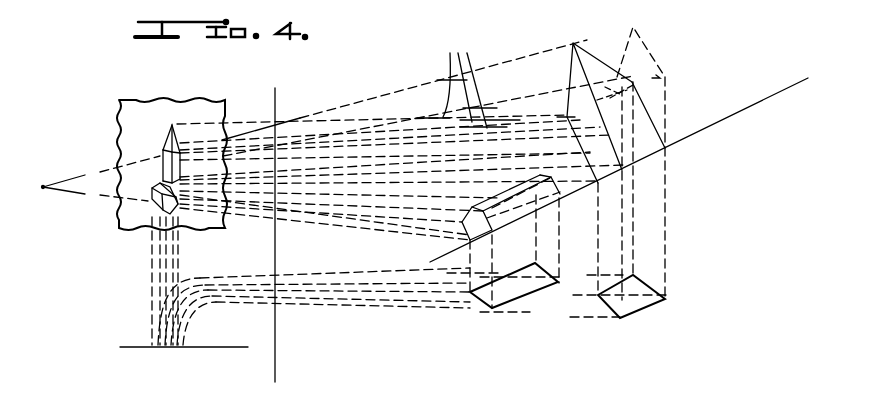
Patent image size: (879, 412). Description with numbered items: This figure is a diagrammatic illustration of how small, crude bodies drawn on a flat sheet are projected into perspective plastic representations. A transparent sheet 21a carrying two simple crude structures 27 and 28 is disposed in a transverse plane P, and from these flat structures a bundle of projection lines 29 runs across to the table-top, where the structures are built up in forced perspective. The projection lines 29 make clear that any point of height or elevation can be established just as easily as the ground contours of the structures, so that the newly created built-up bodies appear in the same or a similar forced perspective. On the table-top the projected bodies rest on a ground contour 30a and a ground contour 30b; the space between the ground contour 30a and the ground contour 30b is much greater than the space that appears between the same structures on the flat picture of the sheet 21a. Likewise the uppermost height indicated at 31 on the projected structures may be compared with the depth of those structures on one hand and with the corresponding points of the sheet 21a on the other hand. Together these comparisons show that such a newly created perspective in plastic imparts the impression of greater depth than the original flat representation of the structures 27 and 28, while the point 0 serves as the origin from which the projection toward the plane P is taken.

The transparent sheet 21a is at (135, 112).
The crude structure 27 is at (176, 140).
The crude structure 28 is at (162, 202).
The transverse plane P is at (272, 91).
The object point 0 is at (94, 226).
The projection lines 29 is at (468, 79).
The ground contour 30a is at (638, 308).
The ground contour 30b is at (507, 305).
The uppermost height 31 is at (637, 27).